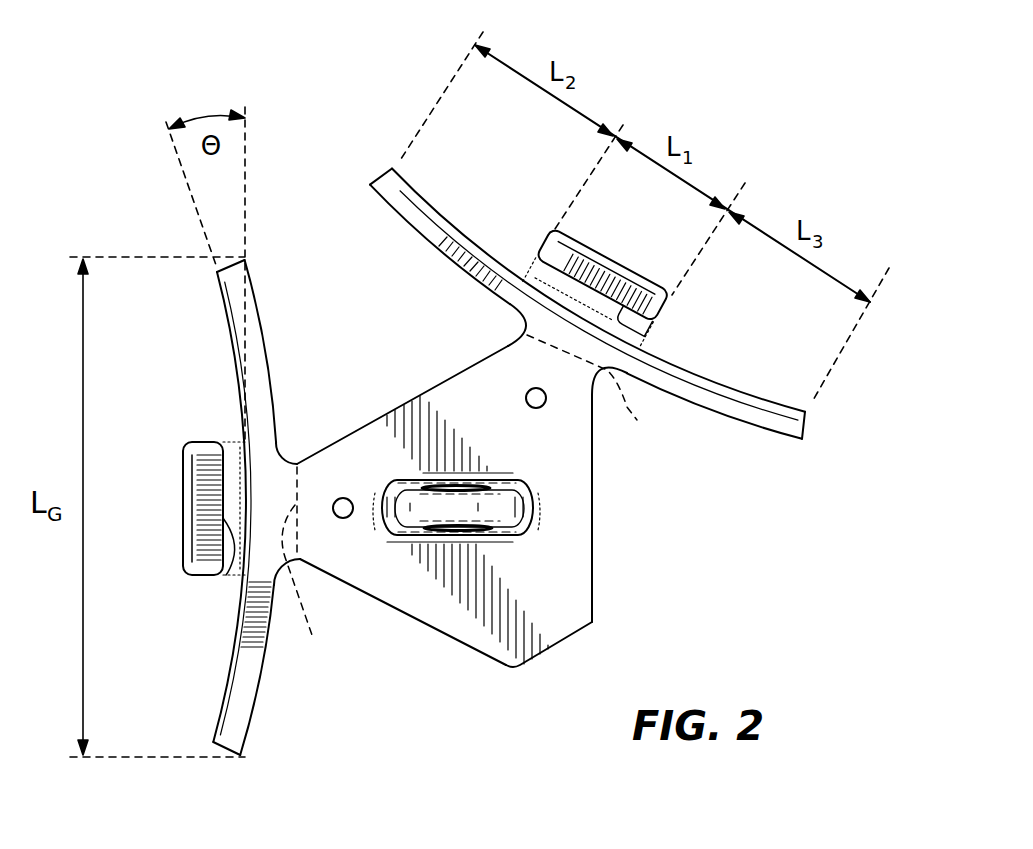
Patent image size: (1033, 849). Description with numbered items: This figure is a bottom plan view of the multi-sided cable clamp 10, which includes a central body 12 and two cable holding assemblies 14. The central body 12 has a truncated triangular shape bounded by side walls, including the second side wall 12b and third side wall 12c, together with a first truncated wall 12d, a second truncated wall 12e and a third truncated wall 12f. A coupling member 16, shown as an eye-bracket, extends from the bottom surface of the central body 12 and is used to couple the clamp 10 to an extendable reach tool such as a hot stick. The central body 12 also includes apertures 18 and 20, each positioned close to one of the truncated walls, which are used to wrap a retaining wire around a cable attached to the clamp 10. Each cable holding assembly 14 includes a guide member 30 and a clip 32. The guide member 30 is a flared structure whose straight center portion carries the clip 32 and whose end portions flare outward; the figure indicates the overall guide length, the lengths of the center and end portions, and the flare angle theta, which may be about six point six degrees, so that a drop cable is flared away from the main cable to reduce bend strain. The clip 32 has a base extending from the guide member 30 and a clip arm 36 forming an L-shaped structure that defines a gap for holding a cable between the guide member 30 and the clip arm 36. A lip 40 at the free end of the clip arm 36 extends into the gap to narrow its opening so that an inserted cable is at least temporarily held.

The clamp 10 is at (463, 456).
The central body 12 is at (479, 518).
The second side wall 12b is at (477, 657).
The third side wall 12c is at (424, 400).
The first truncated wall 12d is at (558, 648).
The second truncated wall 12e is at (308, 566).
The third truncated wall 12f is at (605, 385).
The cable holding assembly 14 is at (437, 415).
The coupling member 16 is at (407, 490).
The aperture 18 is at (343, 519).
The aperture 20 is at (538, 409).
The guide member 30 is at (270, 346).
The clip 32 is at (181, 494).
The clip arm 36 is at (182, 470).
The lip 40 is at (223, 528).